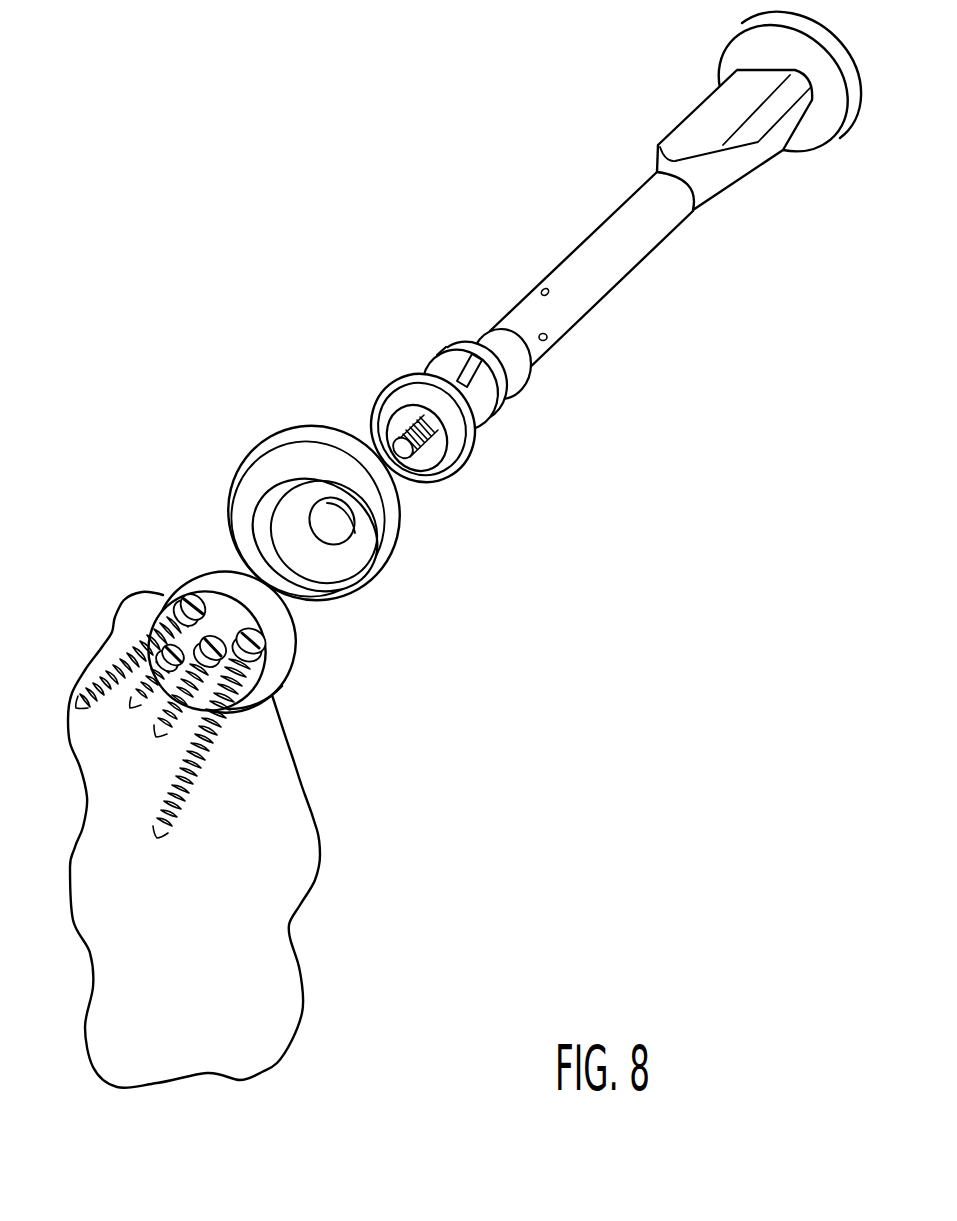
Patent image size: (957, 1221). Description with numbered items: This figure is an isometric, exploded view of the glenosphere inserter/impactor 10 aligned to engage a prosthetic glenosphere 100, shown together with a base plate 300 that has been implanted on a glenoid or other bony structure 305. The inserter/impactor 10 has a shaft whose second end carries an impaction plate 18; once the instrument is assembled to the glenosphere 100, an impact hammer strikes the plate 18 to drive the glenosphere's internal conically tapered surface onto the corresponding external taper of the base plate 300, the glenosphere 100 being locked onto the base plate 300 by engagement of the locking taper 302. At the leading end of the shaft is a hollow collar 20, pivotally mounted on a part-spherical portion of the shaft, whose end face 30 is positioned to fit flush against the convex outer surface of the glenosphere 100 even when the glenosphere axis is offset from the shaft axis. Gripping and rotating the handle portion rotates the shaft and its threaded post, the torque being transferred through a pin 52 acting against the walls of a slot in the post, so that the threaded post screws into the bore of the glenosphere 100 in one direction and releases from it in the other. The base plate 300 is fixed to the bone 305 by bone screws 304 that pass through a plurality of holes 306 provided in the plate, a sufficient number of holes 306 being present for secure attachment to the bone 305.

The inserter/impactor 10 is at (653, 280).
The impaction plate 18 is at (718, 52).
The pin 52 is at (548, 338).
The collar 20 is at (476, 460).
The planar end face 30 is at (444, 472).
The glenosphere 100 is at (409, 527).
The base plate 300 is at (170, 578).
The locking taper 302 is at (292, 655).
The bone screws 304 is at (193, 770).
The bone 305 is at (207, 987).
The holes 306 is at (270, 694).